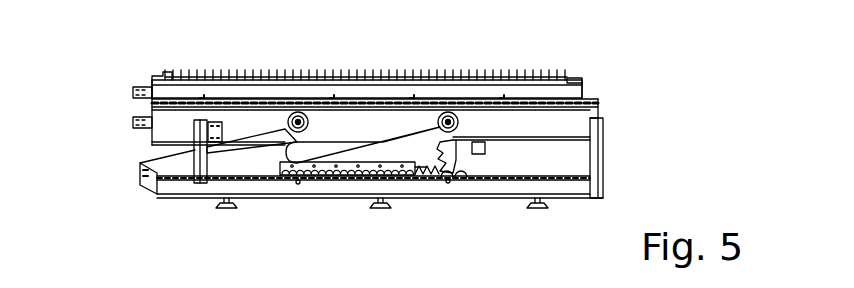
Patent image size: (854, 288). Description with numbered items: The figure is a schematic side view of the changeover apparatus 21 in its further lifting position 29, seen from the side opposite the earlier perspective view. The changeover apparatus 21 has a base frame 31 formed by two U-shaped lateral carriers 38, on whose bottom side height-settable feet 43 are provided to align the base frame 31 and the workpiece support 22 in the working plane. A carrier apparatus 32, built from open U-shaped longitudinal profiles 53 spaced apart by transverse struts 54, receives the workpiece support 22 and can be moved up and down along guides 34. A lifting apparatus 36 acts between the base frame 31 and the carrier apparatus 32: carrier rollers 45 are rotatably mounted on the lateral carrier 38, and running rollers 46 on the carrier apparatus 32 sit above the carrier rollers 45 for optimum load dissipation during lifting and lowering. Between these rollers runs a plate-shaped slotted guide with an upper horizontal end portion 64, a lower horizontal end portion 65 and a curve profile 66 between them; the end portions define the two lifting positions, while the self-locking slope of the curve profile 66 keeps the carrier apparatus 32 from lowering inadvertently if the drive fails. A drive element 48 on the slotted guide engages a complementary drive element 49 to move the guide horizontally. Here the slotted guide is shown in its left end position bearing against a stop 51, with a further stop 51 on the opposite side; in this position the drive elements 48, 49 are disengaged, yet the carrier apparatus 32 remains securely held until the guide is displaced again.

The changeover apparatus 21 is at (628, 45).
The workpiece support 22 is at (553, 52).
The further lifting position 29 is at (106, 102).
The base frame 31 is at (640, 190).
The carrier apparatus 32 is at (612, 99).
The guides 34 is at (598, 167).
The lifting apparatus 36 is at (281, 197).
The lateral carrier 38 is at (165, 200).
The feet 43 is at (226, 212).
The carrier rollers 45 is at (303, 184).
The running rollers 46 is at (295, 108).
The drive element 48 is at (415, 175).
The complementary drive element 49 is at (425, 178).
The stop 51 is at (612, 141).
The longitudinal profile 53 is at (570, 126).
The transverse struts 54 is at (480, 156).
The upper horizontal end portion 64 is at (435, 122).
The lower horizontal end portion 65 is at (302, 152).
The curve profile 66 is at (398, 127).